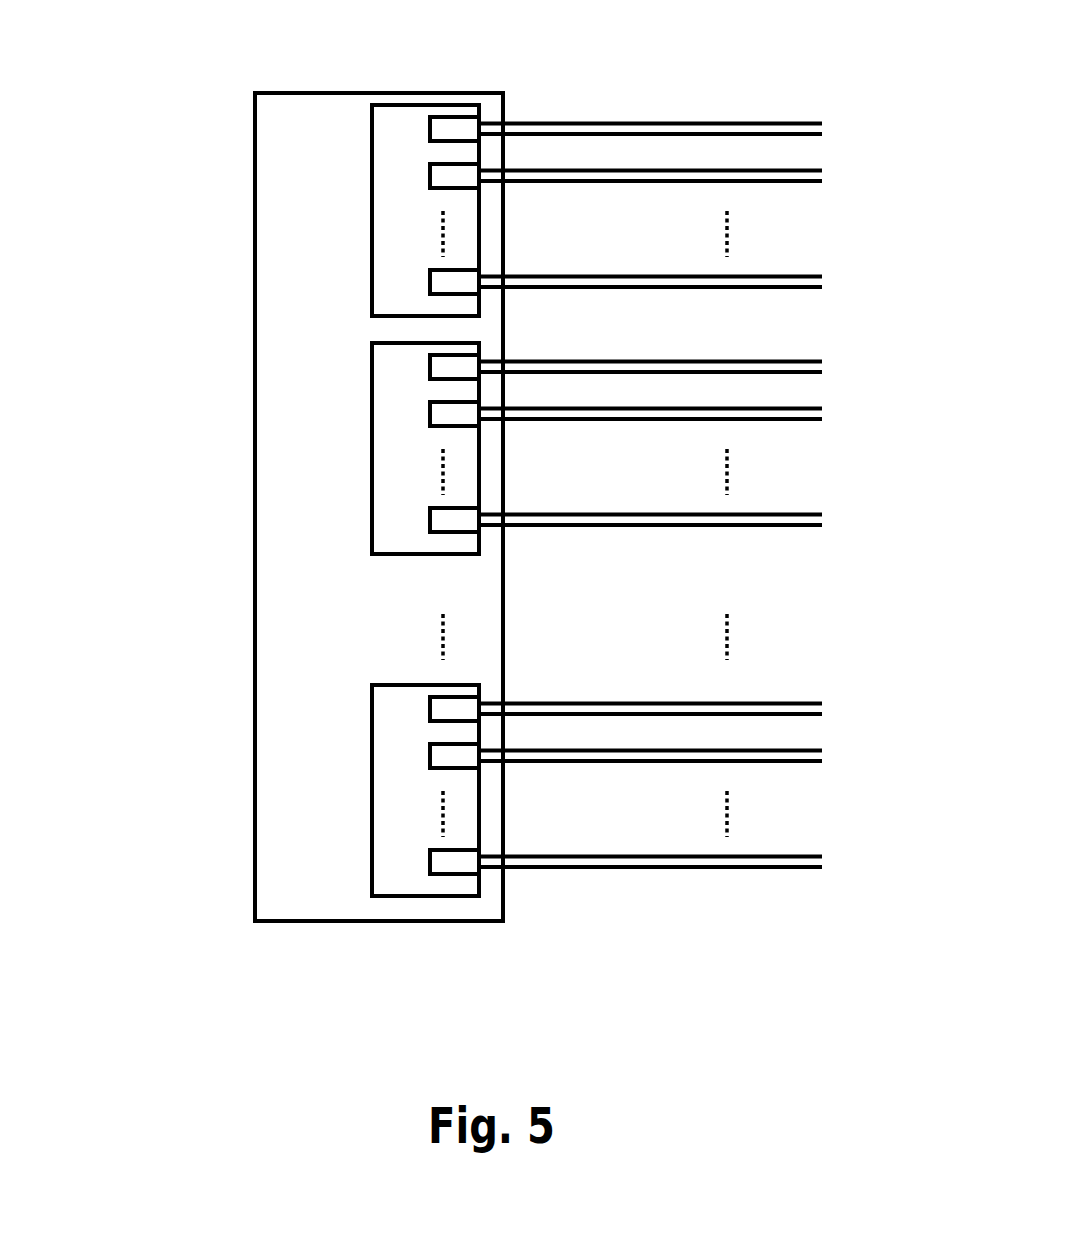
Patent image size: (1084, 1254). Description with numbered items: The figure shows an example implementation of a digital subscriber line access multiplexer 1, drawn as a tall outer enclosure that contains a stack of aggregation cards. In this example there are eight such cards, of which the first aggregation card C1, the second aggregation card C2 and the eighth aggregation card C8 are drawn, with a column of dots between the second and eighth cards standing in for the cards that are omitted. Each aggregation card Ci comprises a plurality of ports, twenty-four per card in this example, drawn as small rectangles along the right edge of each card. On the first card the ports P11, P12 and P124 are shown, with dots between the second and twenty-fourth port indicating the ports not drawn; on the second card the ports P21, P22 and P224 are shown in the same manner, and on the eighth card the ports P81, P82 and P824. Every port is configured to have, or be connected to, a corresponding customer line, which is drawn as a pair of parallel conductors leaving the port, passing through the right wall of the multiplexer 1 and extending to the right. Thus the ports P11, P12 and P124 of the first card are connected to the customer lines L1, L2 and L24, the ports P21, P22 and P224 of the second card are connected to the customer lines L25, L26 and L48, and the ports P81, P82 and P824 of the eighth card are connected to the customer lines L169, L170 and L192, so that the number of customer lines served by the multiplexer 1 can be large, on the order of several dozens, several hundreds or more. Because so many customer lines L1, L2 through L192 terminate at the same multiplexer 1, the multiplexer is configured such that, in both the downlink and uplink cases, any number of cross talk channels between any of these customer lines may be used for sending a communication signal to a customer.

The digital subscriber line access multiplexer 1 is at (290, 910).
The aggregation card C1 is at (384, 117).
The aggregation card C2 is at (384, 355).
The aggregation card C8 is at (384, 697).
The port P11 is at (430, 129).
The port P12 is at (430, 177).
The port P124 is at (430, 283).
The port P21 is at (430, 367).
The port P22 is at (430, 415).
The port P224 is at (430, 521).
The port P81 is at (430, 709).
The port P82 is at (430, 757).
The port P824 is at (430, 863).
The customer line L1 is at (822, 122).
The customer line L2 is at (822, 170).
The customer line L24 is at (822, 276).
The customer line L25 is at (822, 360).
The customer line L26 is at (822, 408).
The customer line L48 is at (822, 514).
The customer line L169 is at (822, 702).
The customer line L170 is at (822, 750).
The customer line L192 is at (822, 856).